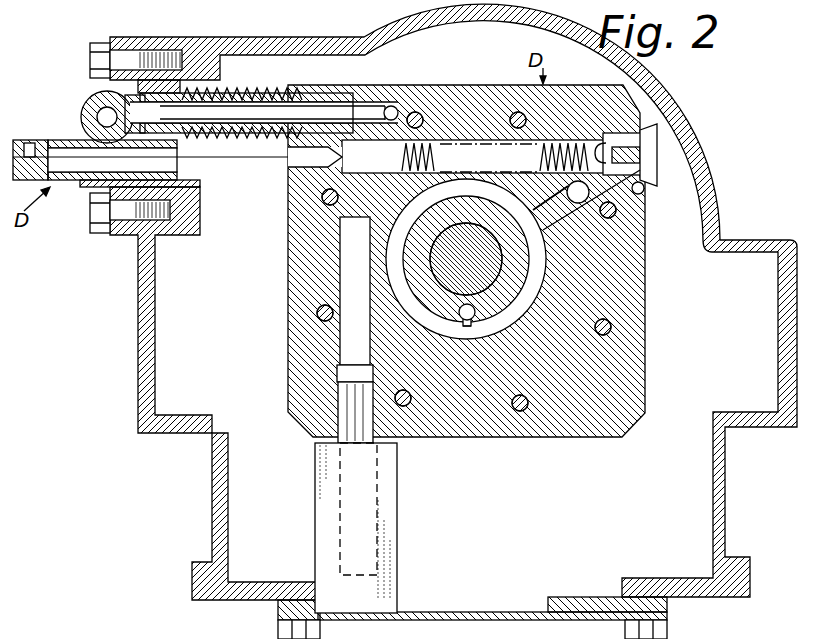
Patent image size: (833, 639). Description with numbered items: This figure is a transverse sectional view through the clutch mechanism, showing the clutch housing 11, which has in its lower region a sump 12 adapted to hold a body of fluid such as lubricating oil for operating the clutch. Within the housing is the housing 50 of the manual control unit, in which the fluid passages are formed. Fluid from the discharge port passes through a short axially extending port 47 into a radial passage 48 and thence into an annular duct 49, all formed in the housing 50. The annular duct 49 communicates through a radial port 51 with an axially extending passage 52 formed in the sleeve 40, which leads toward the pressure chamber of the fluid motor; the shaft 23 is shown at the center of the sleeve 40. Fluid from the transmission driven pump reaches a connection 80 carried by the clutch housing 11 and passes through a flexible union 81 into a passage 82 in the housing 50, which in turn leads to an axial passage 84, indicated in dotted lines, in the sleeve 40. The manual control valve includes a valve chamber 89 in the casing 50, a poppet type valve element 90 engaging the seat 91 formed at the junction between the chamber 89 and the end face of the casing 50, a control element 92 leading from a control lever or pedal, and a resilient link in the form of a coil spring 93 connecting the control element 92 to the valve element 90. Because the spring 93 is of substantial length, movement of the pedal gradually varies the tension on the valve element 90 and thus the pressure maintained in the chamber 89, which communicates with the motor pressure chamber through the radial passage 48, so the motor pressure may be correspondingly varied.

The clutch housing 11 is at (140, 331).
The sump 12 is at (472, 613).
The shaft 23 is at (466, 259).
The sleeve 40 is at (438, 316).
The axially extending port 47 is at (590, 196).
The radial passage 48 is at (573, 230).
The annular duct 49 is at (542, 290).
The housing of the manual control unit 50 is at (648, 336).
The radial port 51 is at (464, 326).
The axially extending passage 52 is at (474, 322).
The connection 80 is at (83, 106).
The flexible union 81 is at (230, 140).
The passage 82 is at (378, 110).
The axial passage 84 is at (446, 156).
The valve chamber 89 is at (620, 135).
The poppet type valve element 90 is at (655, 150).
The seat 91 is at (644, 191).
The control element 92 is at (73, 162).
The coil spring 93 is at (432, 146).